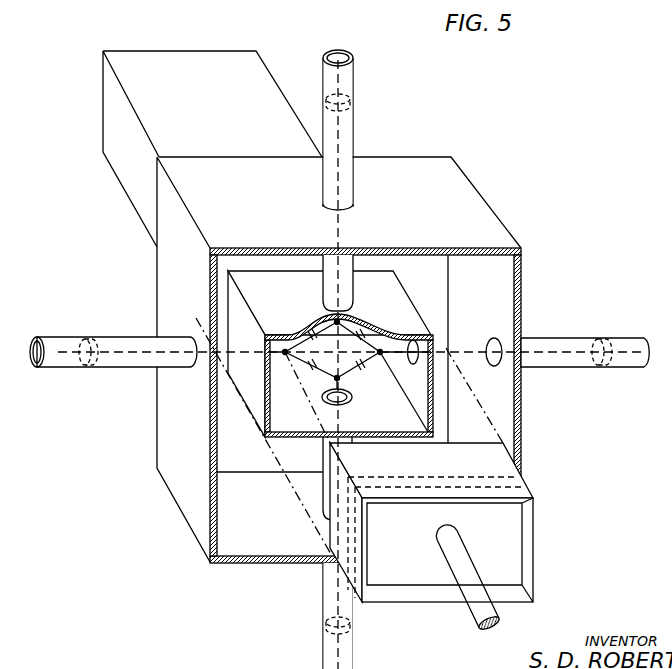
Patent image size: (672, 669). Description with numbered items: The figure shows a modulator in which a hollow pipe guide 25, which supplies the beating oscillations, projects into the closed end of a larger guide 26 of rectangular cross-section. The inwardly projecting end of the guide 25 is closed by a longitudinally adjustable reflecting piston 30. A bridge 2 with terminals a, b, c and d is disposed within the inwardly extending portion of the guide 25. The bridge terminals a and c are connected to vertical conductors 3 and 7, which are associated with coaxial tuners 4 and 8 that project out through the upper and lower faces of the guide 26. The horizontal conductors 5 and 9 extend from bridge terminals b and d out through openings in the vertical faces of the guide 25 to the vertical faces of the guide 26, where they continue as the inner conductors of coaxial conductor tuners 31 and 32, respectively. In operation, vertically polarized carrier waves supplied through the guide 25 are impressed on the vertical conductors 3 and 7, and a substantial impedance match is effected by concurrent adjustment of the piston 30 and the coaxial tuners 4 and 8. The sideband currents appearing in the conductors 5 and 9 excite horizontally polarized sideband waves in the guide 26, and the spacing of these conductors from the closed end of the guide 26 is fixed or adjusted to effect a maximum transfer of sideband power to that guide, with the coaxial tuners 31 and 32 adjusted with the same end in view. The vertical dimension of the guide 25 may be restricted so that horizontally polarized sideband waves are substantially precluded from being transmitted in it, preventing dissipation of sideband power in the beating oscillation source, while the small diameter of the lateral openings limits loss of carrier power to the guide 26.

The bridge 2 is at (349, 354).
The vertical conductor 3 is at (342, 312).
The coaxial tuner 4 is at (356, 130).
The horizontal conductor 5 is at (209, 336).
The vertical conductor 7 is at (341, 381).
The coaxial tuner 8 is at (322, 581).
The horizontal conductor 9 is at (454, 349).
The hollow pipe guide 25 is at (111, 113).
The guide 26 is at (503, 221).
The reflecting piston 30 is at (513, 541).
The coaxial conductor tuner 31 is at (144, 340).
The coaxial conductor tuner 32 is at (559, 338).